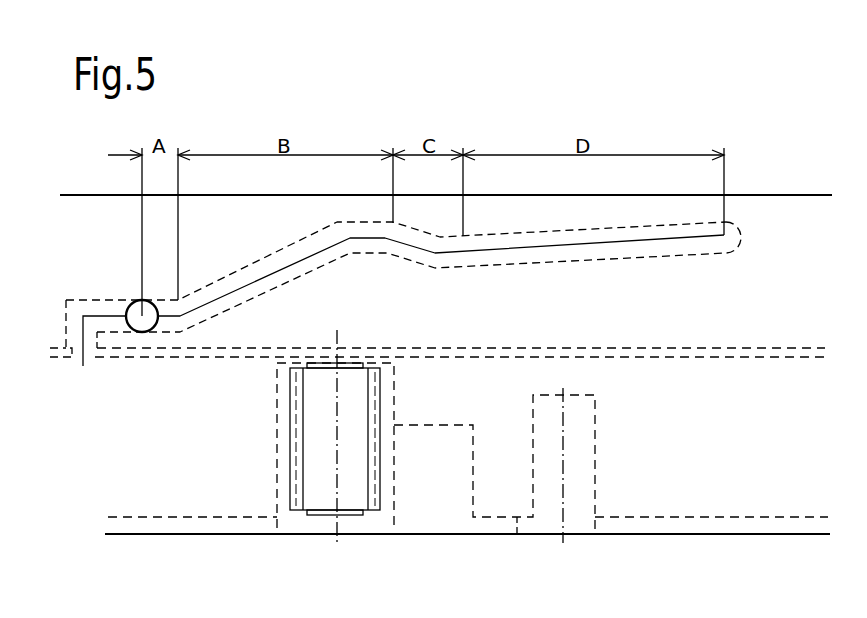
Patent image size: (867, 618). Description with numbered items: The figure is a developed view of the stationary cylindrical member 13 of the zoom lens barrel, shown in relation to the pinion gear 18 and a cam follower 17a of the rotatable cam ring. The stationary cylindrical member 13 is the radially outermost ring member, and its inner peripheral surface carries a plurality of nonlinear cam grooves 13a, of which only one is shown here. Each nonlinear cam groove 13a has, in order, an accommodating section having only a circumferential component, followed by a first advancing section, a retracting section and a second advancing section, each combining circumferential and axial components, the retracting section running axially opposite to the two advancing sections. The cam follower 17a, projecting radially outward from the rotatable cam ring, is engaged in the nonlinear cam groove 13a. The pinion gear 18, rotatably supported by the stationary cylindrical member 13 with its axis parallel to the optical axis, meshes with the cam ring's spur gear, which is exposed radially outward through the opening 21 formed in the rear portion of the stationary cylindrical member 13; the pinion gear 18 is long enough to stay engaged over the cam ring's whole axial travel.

The stationary cylindrical member 13 is at (227, 493).
The nonlinear cam groove 13a is at (549, 264).
The cam follower 17a is at (141, 300).
The pinion gear 18 is at (353, 503).
The opening 21 is at (277, 427).